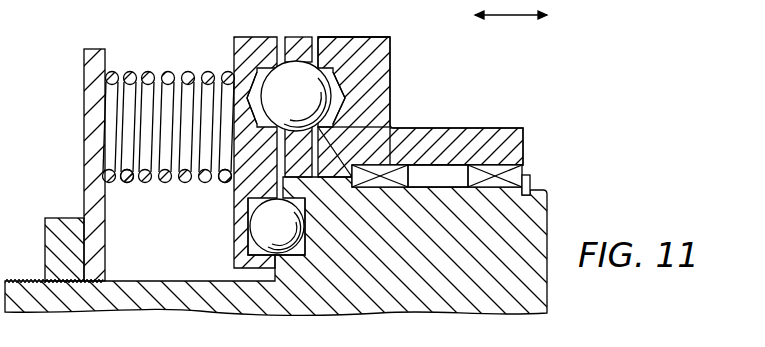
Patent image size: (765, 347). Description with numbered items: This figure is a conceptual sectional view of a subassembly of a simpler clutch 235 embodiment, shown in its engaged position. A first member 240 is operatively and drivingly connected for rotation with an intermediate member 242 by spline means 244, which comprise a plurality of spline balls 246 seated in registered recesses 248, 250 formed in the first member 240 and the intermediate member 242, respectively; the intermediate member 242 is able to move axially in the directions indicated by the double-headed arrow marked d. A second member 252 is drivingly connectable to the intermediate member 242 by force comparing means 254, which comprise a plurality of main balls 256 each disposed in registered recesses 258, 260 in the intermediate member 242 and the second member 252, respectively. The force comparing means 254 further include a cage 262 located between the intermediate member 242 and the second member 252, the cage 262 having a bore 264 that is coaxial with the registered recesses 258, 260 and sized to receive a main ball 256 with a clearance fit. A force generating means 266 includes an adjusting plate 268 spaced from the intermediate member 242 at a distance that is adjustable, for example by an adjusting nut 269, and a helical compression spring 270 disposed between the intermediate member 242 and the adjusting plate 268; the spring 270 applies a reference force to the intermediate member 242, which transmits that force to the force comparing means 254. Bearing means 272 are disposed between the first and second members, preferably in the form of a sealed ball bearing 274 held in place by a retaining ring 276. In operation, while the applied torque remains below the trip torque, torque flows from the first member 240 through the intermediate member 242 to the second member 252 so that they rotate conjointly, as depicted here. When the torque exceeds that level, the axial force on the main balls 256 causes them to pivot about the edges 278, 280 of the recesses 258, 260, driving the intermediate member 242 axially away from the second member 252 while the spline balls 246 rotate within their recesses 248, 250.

The clutch 235 is at (470, 93).
The first member 240 is at (547, 300).
The intermediate member 242 is at (250, 36).
The spline means 244 is at (262, 256).
The spline balls 246 is at (304, 256).
The recess 248 is at (455, 138).
The recess 250 is at (251, 226).
The second member 252 is at (380, 36).
The force comparing means 254 is at (400, 24).
The main balls 256 is at (345, 82).
The recess 258 is at (245, 95).
The recess 260 is at (320, 135).
The cage 262 is at (297, 36).
The bore 264 is at (307, 62).
The force generating means 266 is at (133, 62).
The adjusting plate 268 is at (90, 88).
The adjusting nut 269 is at (62, 218).
The helical compression spring 270 is at (136, 182).
The bearing means 272 is at (512, 177).
The sealed ball bearing 274 is at (499, 147).
The retaining ring 276 is at (531, 188).
The edge 278 is at (233, 143).
The edge 280 is at (316, 90).